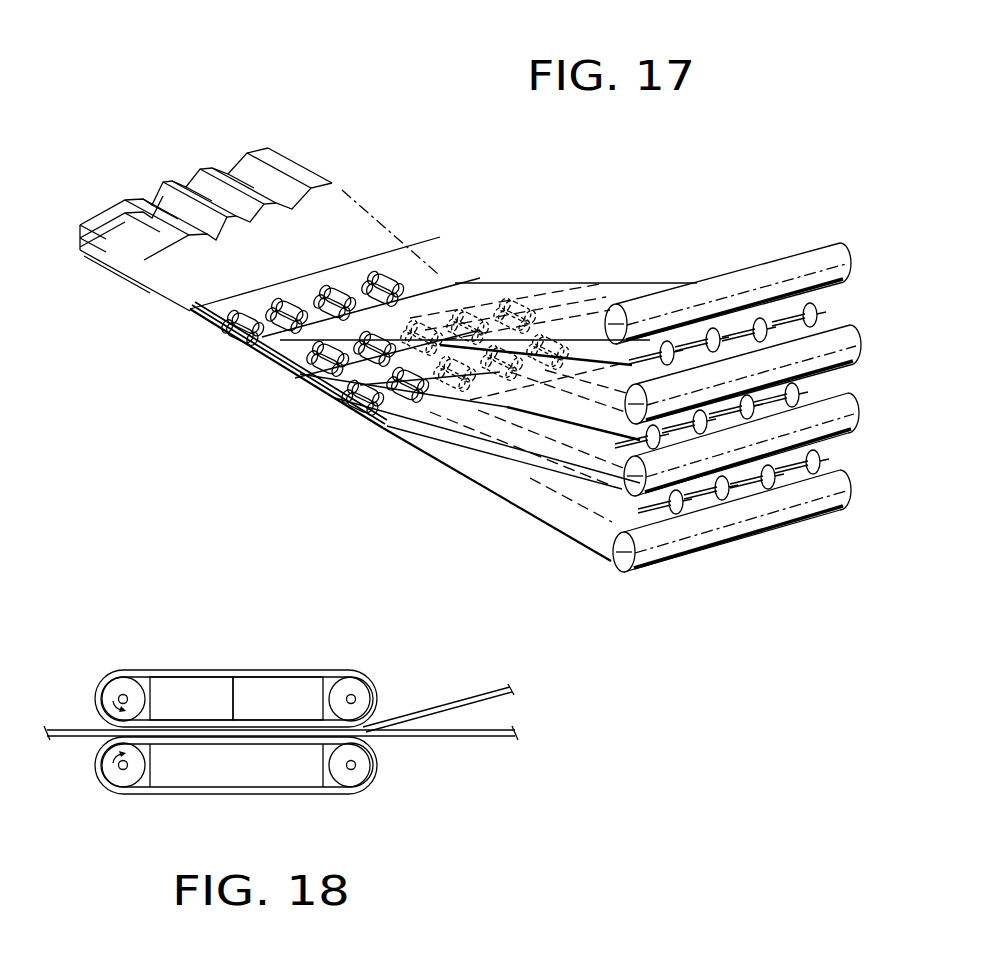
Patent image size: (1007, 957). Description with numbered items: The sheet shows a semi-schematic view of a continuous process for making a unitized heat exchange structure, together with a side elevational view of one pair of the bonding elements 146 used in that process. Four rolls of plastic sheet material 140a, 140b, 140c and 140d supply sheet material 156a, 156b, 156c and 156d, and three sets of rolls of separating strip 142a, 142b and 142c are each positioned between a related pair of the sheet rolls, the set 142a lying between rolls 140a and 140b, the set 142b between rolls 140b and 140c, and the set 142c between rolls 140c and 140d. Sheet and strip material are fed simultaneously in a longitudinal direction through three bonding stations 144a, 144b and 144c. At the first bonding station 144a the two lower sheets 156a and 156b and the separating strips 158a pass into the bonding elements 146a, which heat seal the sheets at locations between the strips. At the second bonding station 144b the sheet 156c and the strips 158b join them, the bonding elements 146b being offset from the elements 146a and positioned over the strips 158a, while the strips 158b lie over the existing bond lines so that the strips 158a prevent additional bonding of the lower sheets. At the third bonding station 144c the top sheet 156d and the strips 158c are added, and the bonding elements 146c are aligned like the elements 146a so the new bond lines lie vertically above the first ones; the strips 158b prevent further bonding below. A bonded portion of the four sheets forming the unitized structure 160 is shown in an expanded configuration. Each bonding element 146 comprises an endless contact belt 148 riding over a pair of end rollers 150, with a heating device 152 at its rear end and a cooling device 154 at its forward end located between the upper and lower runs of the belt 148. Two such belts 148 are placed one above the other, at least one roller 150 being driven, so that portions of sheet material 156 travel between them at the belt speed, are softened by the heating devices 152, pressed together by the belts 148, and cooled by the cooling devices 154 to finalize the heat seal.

In FIG. 17, the unitized structure 160 is at (303, 177).
In FIG. 17, the bonding elements 146c is at (400, 282).
In FIG. 17, the bonding elements 146b is at (477, 308).
In FIG. 17, the bonding elements 146a is at (426, 405).
In FIG. 17, the sheet material 156d is at (580, 282).
In FIG. 17, the sheet material 156c is at (537, 408).
In FIG. 17, the sheet material 156b is at (567, 474).
In FIG. 17, the sheet material 156a is at (570, 540).
In FIG. 17, the separating strips 158c is at (741, 312).
In FIG. 17, the separating strips 158b is at (680, 427).
In FIG. 17, the separating strips 158a is at (660, 492).
In FIG. 17, the roll of plastic sheet material 140d is at (821, 257).
In FIG. 17, the roll of plastic sheet material 140c is at (845, 335).
In FIG. 17, the roll of plastic sheet material 140b is at (838, 413).
In FIG. 17, the roll of plastic sheet material 140a is at (830, 510).
In FIG. 17, the rolls of separating strip 142c is at (822, 308).
In FIG. 17, the rolls of separating strip 142b is at (828, 393).
In FIG. 17, the rolls of separating strip 142a is at (830, 462).
In FIG. 17, the bonding station 144c is at (208, 345).
In FIG. 17, the bonding station 144b is at (270, 380).
In FIG. 17, the bonding station 144a is at (350, 428).
In FIG. 18, the bonding element 146 is at (234, 636).
In FIG. 18, the end rollers 150 is at (118, 687).
In FIG. 18, the cooling device 154 is at (163, 690).
In FIG. 18, the heating device 152 is at (268, 690).
In FIG. 18, the endless contact belt 148 is at (310, 672).
In FIG. 18, the sheet material 156 is at (467, 727).